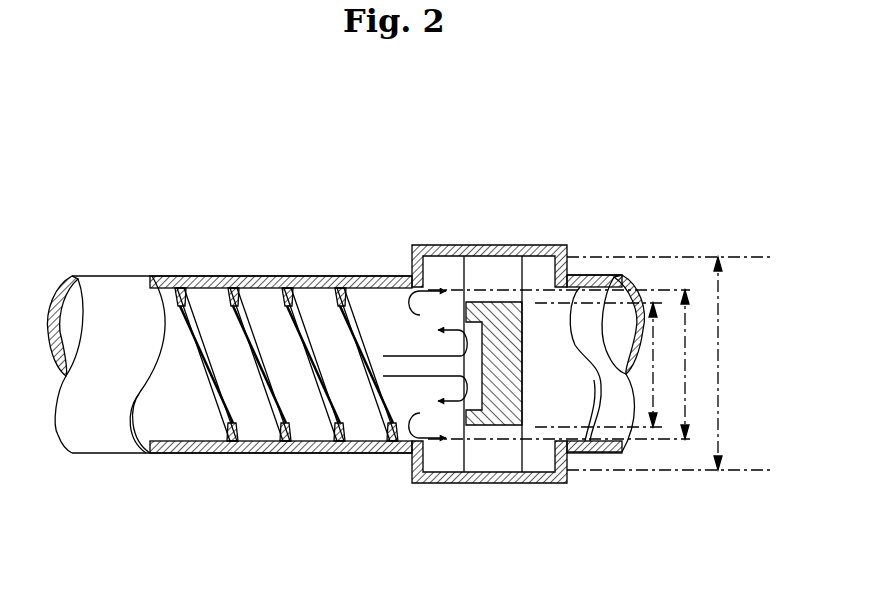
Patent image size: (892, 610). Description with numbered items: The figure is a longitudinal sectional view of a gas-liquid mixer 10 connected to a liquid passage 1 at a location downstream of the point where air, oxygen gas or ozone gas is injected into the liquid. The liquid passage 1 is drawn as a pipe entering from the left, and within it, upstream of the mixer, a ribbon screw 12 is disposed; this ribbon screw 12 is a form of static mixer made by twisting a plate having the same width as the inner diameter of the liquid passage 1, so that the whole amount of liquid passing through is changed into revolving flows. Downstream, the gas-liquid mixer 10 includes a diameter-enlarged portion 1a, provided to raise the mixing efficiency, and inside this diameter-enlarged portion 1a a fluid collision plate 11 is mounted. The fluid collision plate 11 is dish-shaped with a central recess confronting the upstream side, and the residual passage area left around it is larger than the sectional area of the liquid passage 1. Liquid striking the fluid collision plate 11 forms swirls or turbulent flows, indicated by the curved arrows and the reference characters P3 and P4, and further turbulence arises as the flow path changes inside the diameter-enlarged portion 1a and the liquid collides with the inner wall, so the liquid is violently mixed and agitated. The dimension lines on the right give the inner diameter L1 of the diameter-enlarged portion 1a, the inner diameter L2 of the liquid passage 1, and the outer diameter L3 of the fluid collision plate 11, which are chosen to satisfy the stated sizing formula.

The liquid passage 1 is at (133, 305).
The diameter-enlarged portion 1a is at (508, 246).
The gas-liquid mixer 10 is at (580, 213).
The fluid collision plate 11 is at (507, 420).
The ribbon screw 12 is at (229, 287).
The swirl or turbulent flow P3 is at (403, 356).
The swirl or turbulent flow P4 is at (413, 246).
The inner diameter of the diameter-enlarged portion L1 is at (717, 430).
The inner diameter of the liquid passage L2 is at (689, 300).
The outer diameter of the fluid collision plate L3 is at (650, 417).